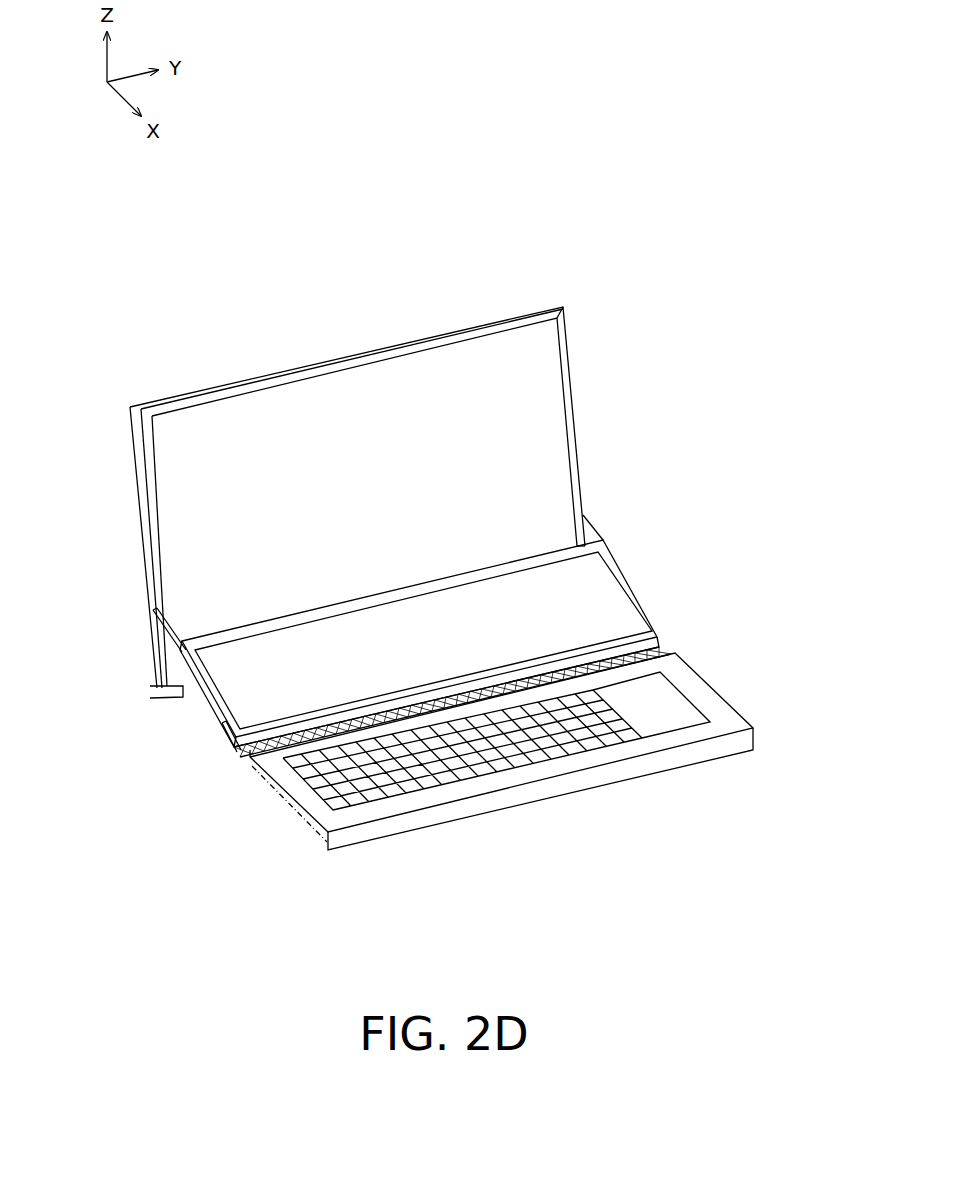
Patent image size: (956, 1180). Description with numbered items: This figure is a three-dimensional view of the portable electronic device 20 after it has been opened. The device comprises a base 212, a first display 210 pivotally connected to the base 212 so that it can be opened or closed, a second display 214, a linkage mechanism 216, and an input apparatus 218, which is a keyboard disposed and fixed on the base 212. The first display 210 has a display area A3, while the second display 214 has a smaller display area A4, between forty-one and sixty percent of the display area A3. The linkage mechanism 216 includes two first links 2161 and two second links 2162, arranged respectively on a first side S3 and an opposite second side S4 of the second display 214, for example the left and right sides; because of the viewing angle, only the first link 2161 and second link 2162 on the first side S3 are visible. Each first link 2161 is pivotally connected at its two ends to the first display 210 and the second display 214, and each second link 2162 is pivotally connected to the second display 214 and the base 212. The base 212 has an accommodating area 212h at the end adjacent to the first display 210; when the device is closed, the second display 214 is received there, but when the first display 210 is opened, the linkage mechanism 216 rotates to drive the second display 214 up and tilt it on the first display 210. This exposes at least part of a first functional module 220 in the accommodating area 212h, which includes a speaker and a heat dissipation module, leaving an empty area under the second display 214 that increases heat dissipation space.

The portable electronic device 20 is at (817, 221).
The first display 210 is at (604, 405).
The base 212 is at (258, 778).
The accommodating area 212h is at (200, 707).
The second display 214 is at (172, 688).
The linkage mechanism 216 is at (772, 497).
The first link 2161 is at (158, 632).
The second link 2162 is at (225, 728).
The input apparatus 218 is at (330, 778).
The first functional module 220 is at (661, 648).
The display area of the first display A3 is at (373, 430).
The display area of the second display A4 is at (600, 615).
The first side S3 is at (320, 918).
The second side S4 is at (826, 804).